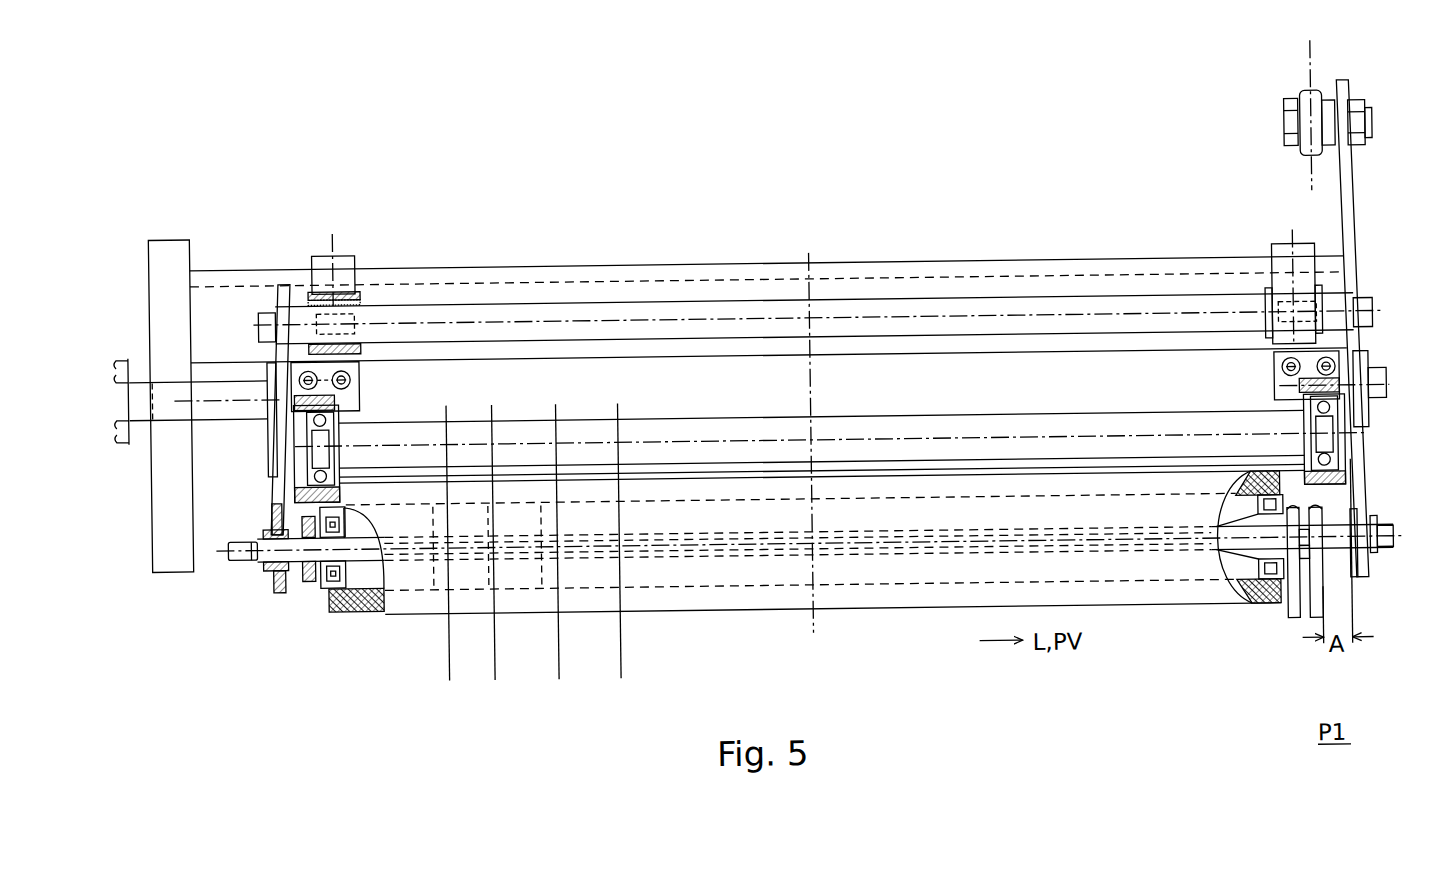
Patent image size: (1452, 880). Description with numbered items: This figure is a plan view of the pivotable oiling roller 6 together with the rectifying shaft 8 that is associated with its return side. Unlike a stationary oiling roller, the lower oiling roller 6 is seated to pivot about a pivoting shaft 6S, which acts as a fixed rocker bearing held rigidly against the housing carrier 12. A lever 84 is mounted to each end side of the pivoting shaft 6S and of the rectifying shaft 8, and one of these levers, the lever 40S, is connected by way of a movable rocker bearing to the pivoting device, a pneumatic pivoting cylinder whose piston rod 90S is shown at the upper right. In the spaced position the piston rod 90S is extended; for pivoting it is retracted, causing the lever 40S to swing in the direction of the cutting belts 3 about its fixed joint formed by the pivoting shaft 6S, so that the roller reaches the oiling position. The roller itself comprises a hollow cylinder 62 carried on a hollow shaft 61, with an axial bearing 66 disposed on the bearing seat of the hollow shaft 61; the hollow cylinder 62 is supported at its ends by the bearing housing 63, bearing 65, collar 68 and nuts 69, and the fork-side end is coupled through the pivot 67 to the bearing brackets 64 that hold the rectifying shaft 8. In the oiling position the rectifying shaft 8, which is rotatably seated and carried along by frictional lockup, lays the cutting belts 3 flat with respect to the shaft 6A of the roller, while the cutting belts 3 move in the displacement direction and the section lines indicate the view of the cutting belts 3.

The cutting belts 3 is at (531, 681).
The pivotable oiling roller 6 is at (815, 569).
The shaft 6A is at (665, 545).
The pivoting shaft 6S is at (946, 317).
The rectifying shaft 8 is at (944, 424).
The housing carrier 12 is at (237, 350).
The lever 40S is at (1343, 207).
The hollow shaft 61 is at (1392, 539).
The hollow cylinder 62 is at (1163, 596).
The bearing housing 63 is at (373, 601).
The bearing bracket 64 is at (276, 478).
The fork lever 65 is at (1291, 614).
The axial bearing 66 is at (322, 594).
The pivot pin 67 is at (1321, 560).
The collar 68 is at (310, 581).
The nut 69 is at (265, 561).
The lever 84 is at (285, 291).
The piston rod 90S is at (1310, 99).